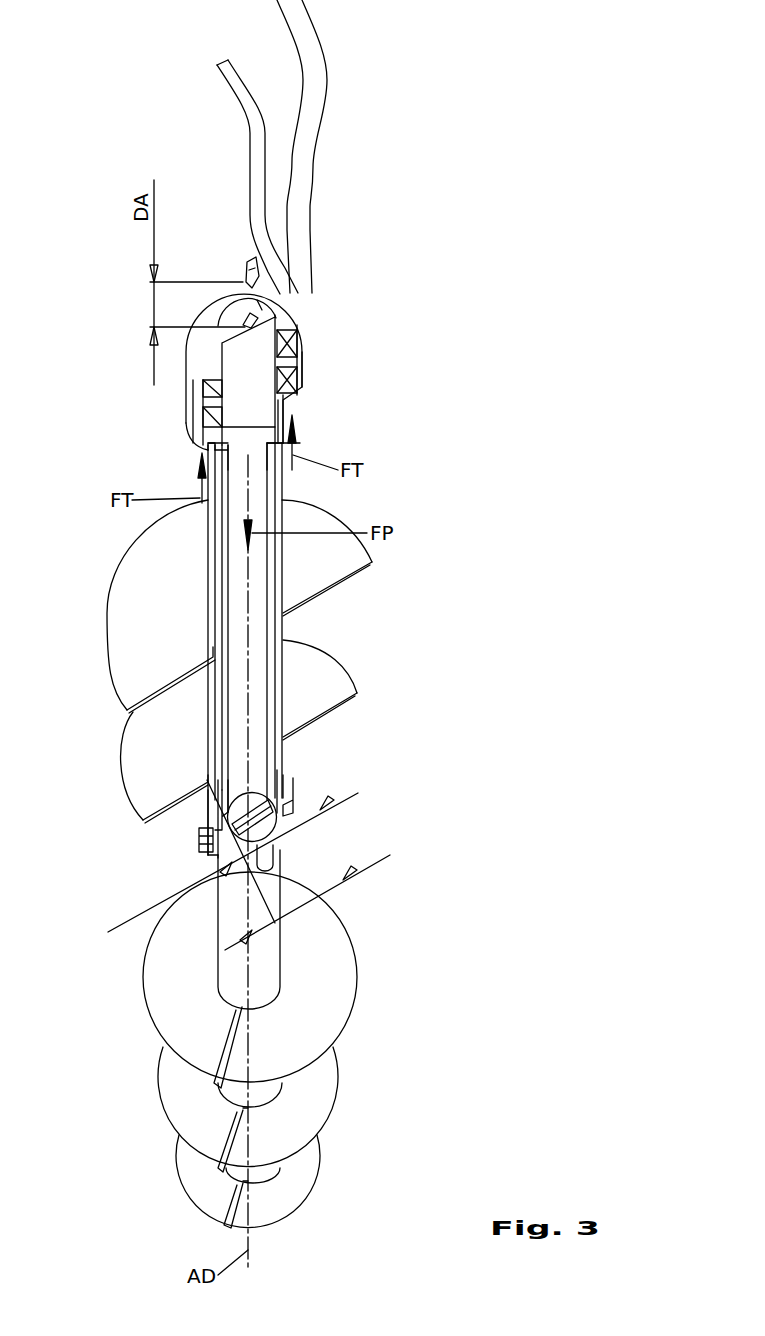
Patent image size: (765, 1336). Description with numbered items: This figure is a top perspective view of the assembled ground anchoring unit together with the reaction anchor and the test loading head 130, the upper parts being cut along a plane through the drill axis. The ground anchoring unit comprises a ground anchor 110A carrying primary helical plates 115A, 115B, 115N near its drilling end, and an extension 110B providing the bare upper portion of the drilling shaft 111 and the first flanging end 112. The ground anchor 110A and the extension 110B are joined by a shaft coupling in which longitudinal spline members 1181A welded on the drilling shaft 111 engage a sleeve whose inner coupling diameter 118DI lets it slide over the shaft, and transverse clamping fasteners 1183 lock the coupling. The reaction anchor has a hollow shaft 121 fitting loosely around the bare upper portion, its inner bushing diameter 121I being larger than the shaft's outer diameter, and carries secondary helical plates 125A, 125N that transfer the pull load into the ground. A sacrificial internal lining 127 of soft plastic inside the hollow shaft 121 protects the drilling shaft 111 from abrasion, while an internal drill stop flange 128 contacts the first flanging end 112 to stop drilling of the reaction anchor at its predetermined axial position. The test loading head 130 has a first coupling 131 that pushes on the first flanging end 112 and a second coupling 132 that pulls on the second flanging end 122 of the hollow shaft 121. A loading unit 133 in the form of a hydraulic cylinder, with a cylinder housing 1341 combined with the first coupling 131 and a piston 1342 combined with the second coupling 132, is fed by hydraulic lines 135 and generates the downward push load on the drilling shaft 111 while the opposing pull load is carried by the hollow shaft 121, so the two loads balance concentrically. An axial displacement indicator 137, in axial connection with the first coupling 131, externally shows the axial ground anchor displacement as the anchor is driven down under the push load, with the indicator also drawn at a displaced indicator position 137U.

The test loading head 130 is at (102, 313).
The upper hook of wire 137U is at (247, 260).
The axial displacement indicator 137 is at (243, 323).
The hydraulic line 135 is at (257, 203).
The loading unit 133 is at (315, 340).
The piston 1342 is at (280, 358).
The cylinder housing 1341 is at (300, 372).
The second coupling 132 is at (280, 402).
The first coupling 131 is at (300, 445).
The second flanging end 122 is at (200, 427).
The internal drill stop flange 128 is at (230, 466).
The first flanging end 112 is at (228, 466).
The drilling shaft 111 is at (275, 588).
The hollow shaft 121 is at (208, 545).
The secondary helical plate 125N is at (113, 627).
The secondary helical plate 125A is at (140, 770).
The sacrificial internal lining 127 is at (282, 777).
The extension 110B is at (285, 782).
The longitudinal spline member 1181A is at (272, 855).
The transverse clamping fastener 1183 is at (203, 837).
The inner coupling diameter 118DI is at (298, 865).
The inclined axis 121I is at (228, 863).
The ground anchor 110A is at (263, 943).
The primary helical plate 115N is at (332, 973).
The primary helical plate 115B is at (310, 1107).
The primary helical plate 115A is at (292, 1180).